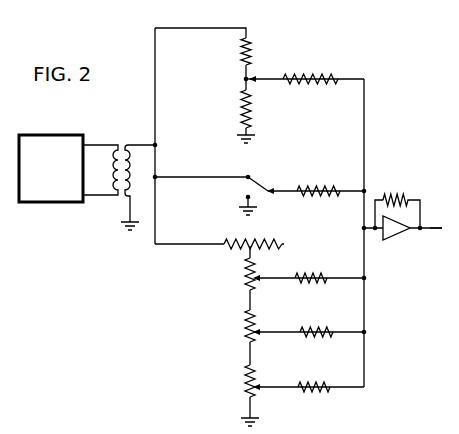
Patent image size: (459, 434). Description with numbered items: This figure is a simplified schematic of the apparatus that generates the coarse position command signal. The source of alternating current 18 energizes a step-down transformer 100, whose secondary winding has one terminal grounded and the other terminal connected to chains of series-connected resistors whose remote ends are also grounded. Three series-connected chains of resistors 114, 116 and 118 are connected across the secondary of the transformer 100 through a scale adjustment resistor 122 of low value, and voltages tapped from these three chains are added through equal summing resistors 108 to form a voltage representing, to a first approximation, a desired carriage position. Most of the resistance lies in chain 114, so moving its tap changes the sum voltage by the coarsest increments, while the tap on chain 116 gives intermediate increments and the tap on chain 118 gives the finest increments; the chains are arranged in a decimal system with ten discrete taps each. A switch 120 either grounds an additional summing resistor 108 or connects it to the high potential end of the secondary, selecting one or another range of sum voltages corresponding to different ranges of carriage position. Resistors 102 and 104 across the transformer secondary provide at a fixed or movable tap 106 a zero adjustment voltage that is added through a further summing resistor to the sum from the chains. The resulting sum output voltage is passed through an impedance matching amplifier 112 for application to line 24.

The source of alternating current 18 is at (38, 135).
The step-down transformer 100 is at (116, 143).
The resistor 102 is at (251, 49).
The resistor 104 is at (253, 124).
The tap 106 is at (259, 81).
The summing resistors 108 is at (311, 77).
The impedance matching amplifier 112 is at (397, 236).
The chain of resistors 114 is at (247, 265).
The chain of resistors 116 is at (247, 328).
The chain of resistors 118 is at (247, 382).
The switch 120 is at (257, 184).
The scale adjustment resistor 122 is at (257, 241).
The line 24 is at (430, 229).